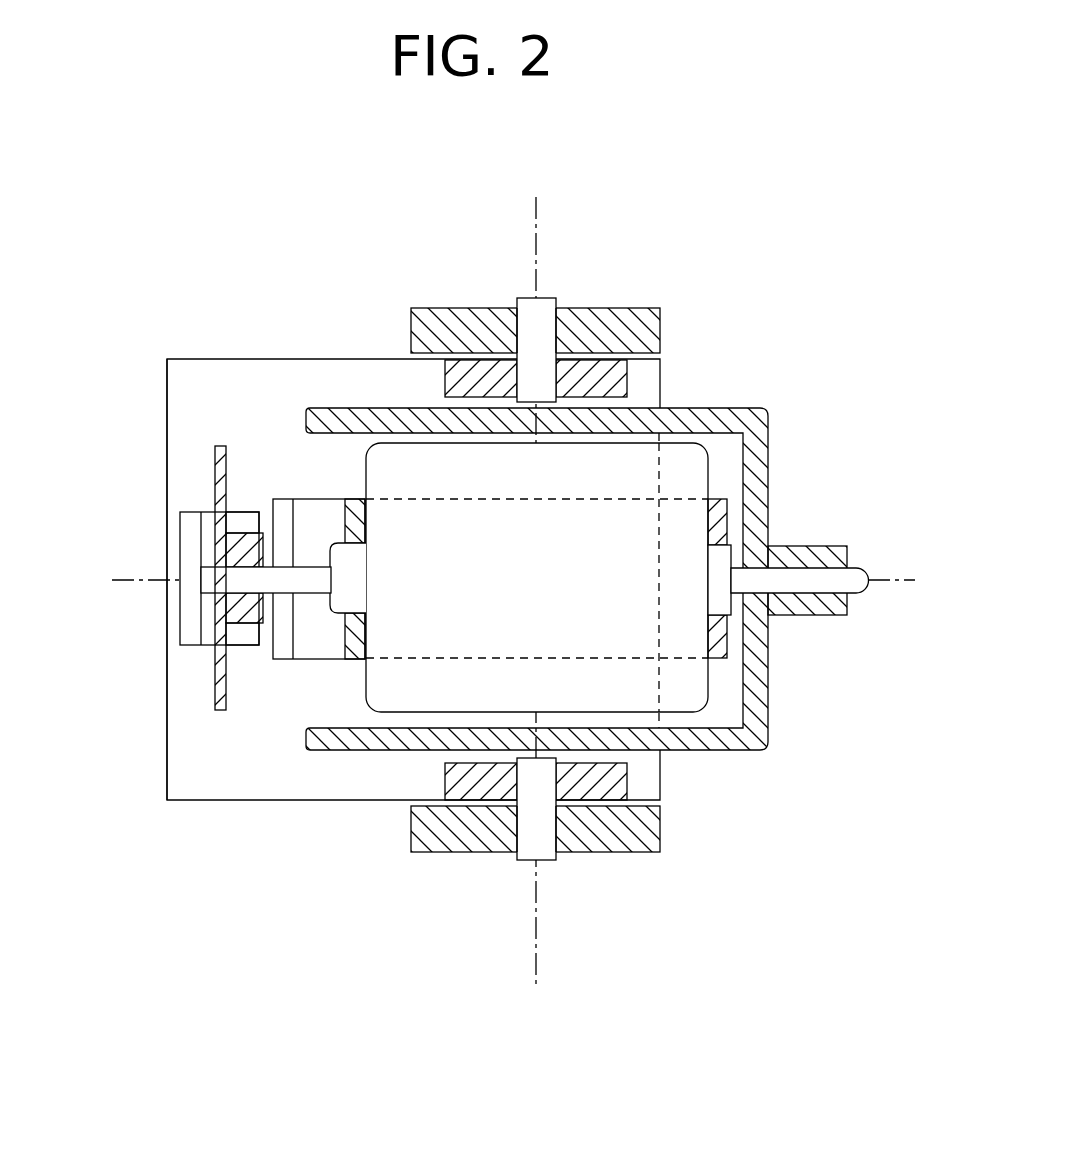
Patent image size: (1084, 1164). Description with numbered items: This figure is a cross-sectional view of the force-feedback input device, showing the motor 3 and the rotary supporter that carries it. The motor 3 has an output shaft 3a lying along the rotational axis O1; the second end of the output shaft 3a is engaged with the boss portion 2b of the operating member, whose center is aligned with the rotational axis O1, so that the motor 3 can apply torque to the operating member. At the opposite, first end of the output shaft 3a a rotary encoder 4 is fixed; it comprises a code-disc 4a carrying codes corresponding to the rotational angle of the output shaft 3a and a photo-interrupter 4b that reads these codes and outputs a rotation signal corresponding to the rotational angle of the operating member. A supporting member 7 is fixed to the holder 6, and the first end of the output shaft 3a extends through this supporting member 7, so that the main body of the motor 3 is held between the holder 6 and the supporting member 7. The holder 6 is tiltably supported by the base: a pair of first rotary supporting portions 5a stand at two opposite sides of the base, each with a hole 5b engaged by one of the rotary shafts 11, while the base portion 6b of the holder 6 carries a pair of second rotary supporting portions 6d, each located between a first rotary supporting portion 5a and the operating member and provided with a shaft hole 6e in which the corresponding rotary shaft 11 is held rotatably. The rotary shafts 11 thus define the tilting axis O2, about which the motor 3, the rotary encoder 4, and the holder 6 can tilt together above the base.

The boss portion 2b is at (825, 615).
The motor 3 is at (708, 467).
The output shaft 3a is at (870, 582).
The rotary encoder 4 is at (190, 684).
The code-disc 4a is at (215, 472).
The photo-interrupter 4b is at (181, 538).
The first rotary supporting portions 5a is at (660, 328).
The hole 5b is at (552, 350).
The holder 6 is at (251, 352).
The base portion 6b is at (183, 660).
The second rotary supporting portions 6d is at (452, 380).
The shaft hole 6e is at (557, 378).
The supporting member 7 is at (304, 642).
The rotary shafts 11 is at (520, 298).
The rotational axis O1 is at (538, 580).
The tilting axis O2 is at (538, 574).